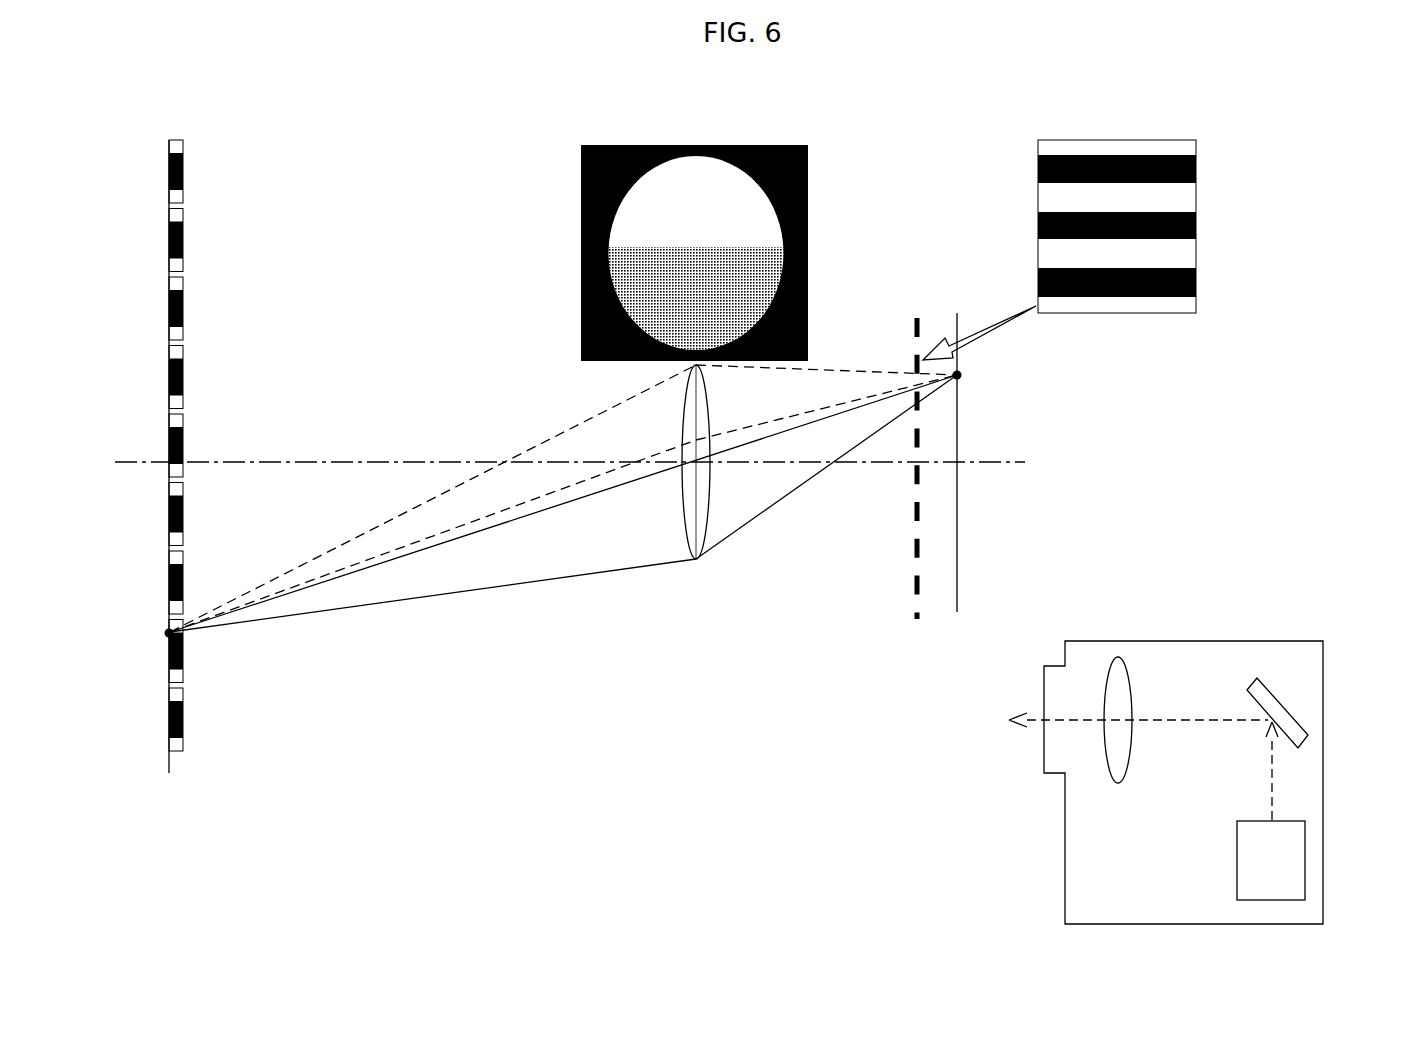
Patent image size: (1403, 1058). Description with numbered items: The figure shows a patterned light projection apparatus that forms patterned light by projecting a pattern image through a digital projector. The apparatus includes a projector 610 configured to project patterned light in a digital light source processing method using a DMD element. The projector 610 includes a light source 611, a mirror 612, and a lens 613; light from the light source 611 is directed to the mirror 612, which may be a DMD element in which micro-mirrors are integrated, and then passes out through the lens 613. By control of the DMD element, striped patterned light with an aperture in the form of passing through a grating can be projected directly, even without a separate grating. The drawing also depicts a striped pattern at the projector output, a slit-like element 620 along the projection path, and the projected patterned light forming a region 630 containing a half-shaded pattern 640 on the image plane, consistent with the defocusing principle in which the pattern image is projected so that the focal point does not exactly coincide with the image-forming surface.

The projector 610 is at (962, 376).
The light source 611 is at (1306, 858).
The mirror 612 is at (1285, 702).
The lens 613 is at (1110, 660).
The pattern mask 620 is at (918, 598).
The irradiated region 630 is at (693, 146).
The pattern image 640 is at (637, 213).